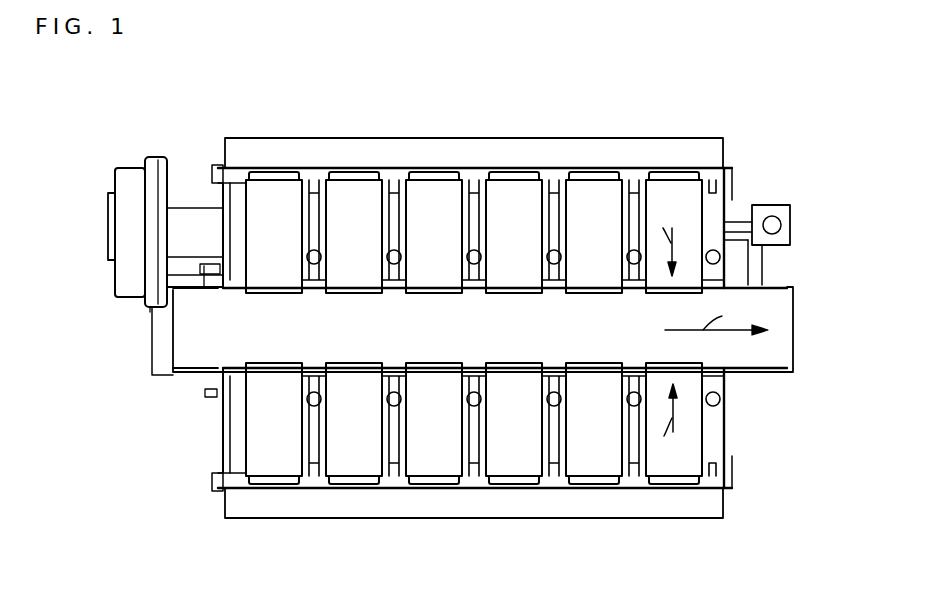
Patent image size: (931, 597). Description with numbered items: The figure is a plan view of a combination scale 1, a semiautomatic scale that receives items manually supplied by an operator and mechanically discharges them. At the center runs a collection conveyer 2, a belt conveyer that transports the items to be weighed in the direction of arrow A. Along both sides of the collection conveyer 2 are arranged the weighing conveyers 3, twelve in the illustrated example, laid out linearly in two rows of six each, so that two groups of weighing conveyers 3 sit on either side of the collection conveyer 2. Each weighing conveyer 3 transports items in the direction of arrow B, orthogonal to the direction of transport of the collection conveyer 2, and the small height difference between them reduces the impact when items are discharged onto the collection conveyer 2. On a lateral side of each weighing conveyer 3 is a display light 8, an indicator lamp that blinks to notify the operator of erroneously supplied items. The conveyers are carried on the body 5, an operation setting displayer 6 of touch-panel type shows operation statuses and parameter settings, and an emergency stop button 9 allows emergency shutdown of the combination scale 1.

The combination scale 1 is at (797, 132).
The collection conveyer 2 is at (780, 345).
The weighing conveyers 3 is at (273, 197).
The body 5 is at (712, 508).
The operation setting displayer 6 is at (113, 280).
The display light 8 is at (314, 392).
The emergency stop button 9 is at (778, 222).